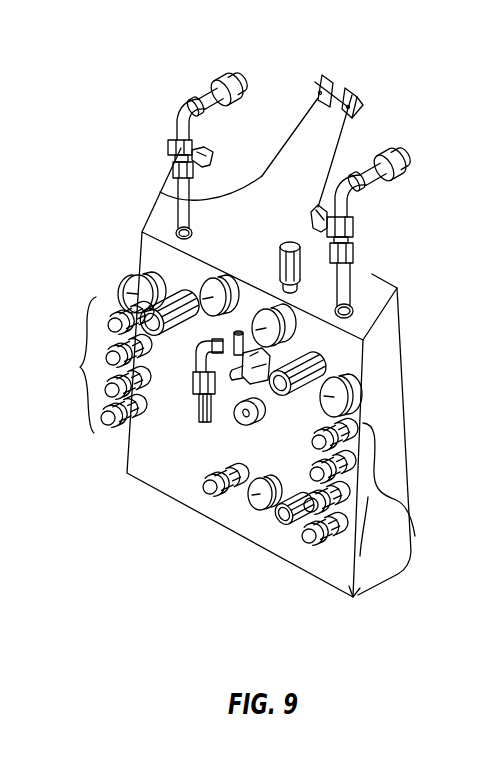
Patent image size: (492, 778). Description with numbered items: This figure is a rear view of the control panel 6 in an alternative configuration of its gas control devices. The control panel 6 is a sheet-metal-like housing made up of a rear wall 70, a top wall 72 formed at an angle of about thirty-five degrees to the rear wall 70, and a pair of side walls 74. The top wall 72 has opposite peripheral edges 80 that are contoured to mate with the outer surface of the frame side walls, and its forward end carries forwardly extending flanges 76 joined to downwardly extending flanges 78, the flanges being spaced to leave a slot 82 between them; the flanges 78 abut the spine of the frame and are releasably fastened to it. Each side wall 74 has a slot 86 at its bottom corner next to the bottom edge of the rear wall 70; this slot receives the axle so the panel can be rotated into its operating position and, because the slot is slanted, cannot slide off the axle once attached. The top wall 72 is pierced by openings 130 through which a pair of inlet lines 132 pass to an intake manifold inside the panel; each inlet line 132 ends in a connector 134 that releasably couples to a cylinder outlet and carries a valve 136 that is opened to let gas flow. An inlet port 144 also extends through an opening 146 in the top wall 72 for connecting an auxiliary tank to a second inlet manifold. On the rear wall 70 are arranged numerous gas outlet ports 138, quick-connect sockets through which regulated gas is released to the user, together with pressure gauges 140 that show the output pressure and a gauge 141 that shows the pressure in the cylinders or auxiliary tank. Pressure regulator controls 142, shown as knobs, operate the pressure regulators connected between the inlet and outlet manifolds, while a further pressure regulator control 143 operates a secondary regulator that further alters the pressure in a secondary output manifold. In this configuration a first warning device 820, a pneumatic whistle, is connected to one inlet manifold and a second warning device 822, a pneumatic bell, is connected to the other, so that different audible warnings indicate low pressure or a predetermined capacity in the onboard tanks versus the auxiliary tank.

The control panel 6 is at (128, 475).
The rear wall 70 is at (303, 560).
The top wall 72 is at (163, 207).
The side wall 74 is at (403, 481).
The forwardly extending flange 76 is at (319, 82).
The downwardly extending flange 78 is at (362, 107).
The peripheral edge 80 is at (264, 173).
The slot 82 is at (344, 87).
The slot 86 is at (352, 600).
The opening 130 is at (170, 222).
The inlet line 132 is at (170, 172).
The connector 134 is at (222, 72).
The valve 136 is at (358, 224).
The gas outlet port 138 is at (436, 524).
The pressure gauge 140 is at (123, 288).
The gauge 141 is at (150, 273).
The pressure regulator control 142 is at (172, 343).
The pressure regulator control 143 is at (283, 527).
The inlet port 144 is at (290, 244).
The opening 146 is at (283, 287).
The first warning device 820 is at (198, 400).
The second warning device 822 is at (243, 426).